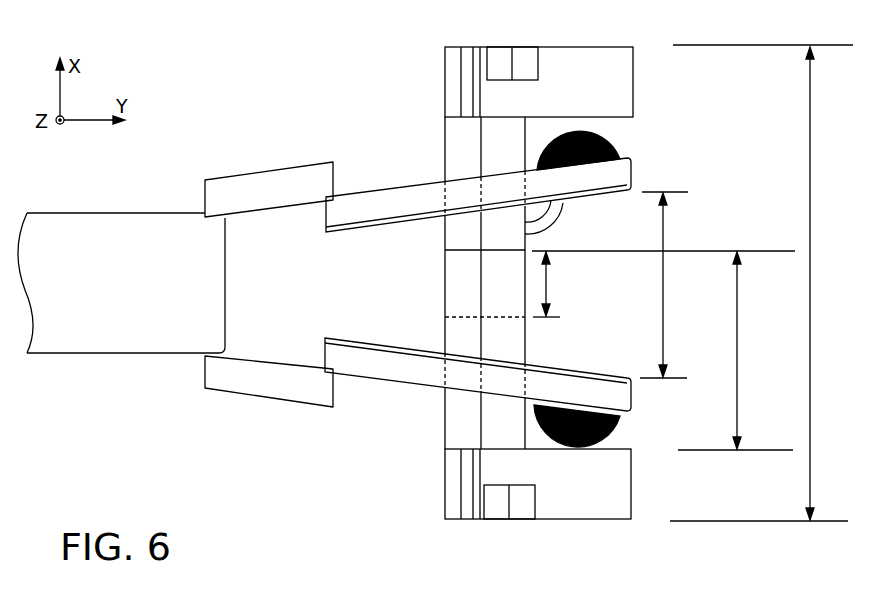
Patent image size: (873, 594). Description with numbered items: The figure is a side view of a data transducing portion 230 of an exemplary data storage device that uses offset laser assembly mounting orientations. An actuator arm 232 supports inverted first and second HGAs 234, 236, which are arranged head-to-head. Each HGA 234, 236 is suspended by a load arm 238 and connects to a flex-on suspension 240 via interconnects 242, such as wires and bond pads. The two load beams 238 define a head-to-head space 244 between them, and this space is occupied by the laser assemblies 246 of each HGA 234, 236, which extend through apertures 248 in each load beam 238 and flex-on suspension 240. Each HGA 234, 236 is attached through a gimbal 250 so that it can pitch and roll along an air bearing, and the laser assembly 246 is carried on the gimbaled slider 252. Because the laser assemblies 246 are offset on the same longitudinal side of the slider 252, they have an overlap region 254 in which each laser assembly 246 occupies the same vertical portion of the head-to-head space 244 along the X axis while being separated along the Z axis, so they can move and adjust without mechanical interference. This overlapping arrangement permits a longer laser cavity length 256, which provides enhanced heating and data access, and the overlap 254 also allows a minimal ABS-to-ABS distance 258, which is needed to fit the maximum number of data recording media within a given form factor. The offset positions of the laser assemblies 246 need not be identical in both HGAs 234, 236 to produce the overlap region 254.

The data transducing portion 230 is at (160, 436).
The actuator arm 232 is at (121, 283).
The first HGA 234 is at (687, 506).
The second HGA 236 is at (675, 115).
The load arm 238 is at (322, 216).
The flex-on suspension 240 is at (350, 233).
The interconnects 242 is at (562, 233).
The head-to-head space 244 is at (674, 285).
The laser assembly 246 is at (435, 248).
The apertures 248 is at (437, 187).
The gimbal 250 is at (622, 140).
The slider 252 is at (633, 62).
The overlap region 254 is at (563, 284).
The laser cavity length 256 is at (663, 350).
The ABS-to-ABS distance 258 is at (761, 283).